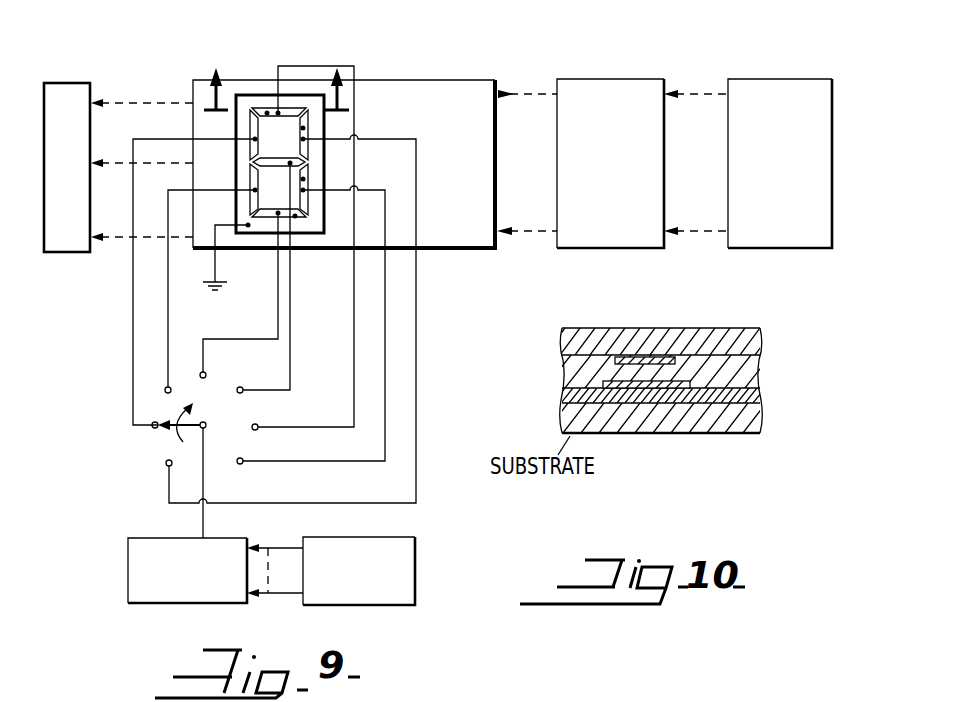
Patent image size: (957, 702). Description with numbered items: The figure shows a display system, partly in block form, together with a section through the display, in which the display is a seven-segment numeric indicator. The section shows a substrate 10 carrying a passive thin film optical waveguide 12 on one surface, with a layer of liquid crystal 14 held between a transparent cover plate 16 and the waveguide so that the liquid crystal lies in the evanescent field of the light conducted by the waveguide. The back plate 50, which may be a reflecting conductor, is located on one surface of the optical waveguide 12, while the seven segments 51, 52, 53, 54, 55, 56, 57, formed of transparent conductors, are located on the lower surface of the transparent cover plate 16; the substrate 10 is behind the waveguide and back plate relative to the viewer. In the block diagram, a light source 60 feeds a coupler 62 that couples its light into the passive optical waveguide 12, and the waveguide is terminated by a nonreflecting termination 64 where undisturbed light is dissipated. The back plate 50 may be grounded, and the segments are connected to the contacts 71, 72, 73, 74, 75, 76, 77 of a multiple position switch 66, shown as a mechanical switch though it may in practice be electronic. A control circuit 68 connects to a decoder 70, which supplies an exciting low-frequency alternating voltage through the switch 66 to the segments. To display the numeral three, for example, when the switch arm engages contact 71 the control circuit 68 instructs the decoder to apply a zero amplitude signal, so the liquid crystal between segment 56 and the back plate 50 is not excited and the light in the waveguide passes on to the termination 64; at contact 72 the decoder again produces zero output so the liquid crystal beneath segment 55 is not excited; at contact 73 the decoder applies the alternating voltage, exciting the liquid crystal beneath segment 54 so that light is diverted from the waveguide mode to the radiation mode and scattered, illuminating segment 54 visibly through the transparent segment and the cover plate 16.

In FIG. 9, the substrate 10 is at (212, 62).
In FIG. 9, the optical waveguide 12 is at (427, 92).
In FIG. 10, the optical waveguide 12 is at (740, 408).
In FIG. 10, the liquid crystal 14 is at (755, 368).
In FIG. 10, the cover plate 16 is at (565, 343).
In FIG. 9, the back plate 50 is at (236, 119).
In FIG. 10, the back plate 50 is at (655, 396).
In FIG. 9, the segment 51 is at (267, 110).
In FIG. 10, the segment 51 is at (655, 357).
In FIG. 9, the segment 52 is at (305, 126).
In FIG. 9, the segment 53 is at (305, 178).
In FIG. 9, the segment 54 is at (296, 218).
In FIG. 9, the segment 55 is at (253, 198).
In FIG. 9, the segment 56 is at (253, 145).
In FIG. 9, the segment 57 is at (279, 146).
In FIG. 9, the light source 60 is at (776, 79).
In FIG. 9, the coupler 62 is at (608, 79).
In FIG. 9, the nonreflecting termination 64 is at (69, 83).
In FIG. 9, the multiple position switch 66 is at (110, 442).
In FIG. 9, the control circuit 68 is at (415, 572).
In FIG. 9, the decoder 70 is at (128, 564).
In FIG. 9, the contact 71 is at (153, 422).
In FIG. 9, the contact 72 is at (170, 387).
In FIG. 9, the contact 73 is at (206, 374).
In FIG. 9, the contact 74 is at (243, 388).
In FIG. 9, the contact 75 is at (258, 425).
In FIG. 9, the contact 76 is at (243, 459).
In FIG. 9, the contact 77 is at (166, 464).